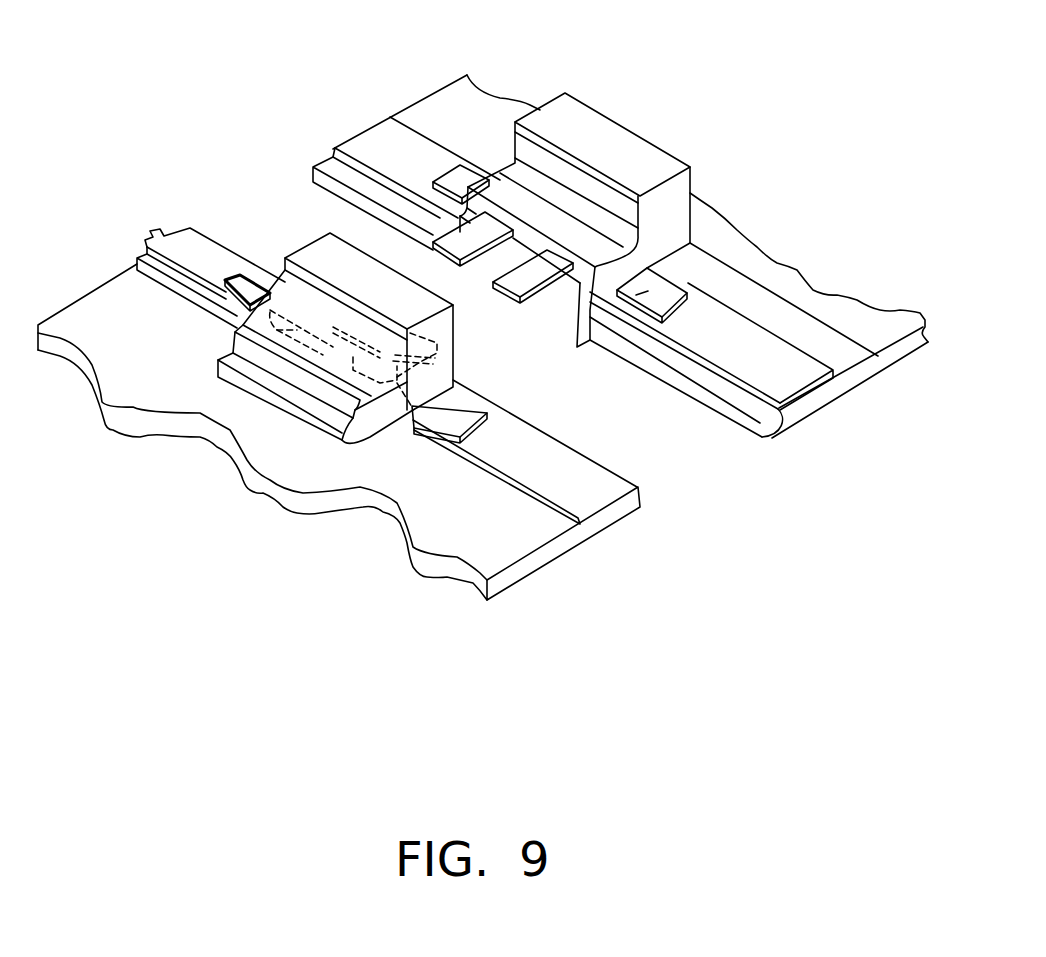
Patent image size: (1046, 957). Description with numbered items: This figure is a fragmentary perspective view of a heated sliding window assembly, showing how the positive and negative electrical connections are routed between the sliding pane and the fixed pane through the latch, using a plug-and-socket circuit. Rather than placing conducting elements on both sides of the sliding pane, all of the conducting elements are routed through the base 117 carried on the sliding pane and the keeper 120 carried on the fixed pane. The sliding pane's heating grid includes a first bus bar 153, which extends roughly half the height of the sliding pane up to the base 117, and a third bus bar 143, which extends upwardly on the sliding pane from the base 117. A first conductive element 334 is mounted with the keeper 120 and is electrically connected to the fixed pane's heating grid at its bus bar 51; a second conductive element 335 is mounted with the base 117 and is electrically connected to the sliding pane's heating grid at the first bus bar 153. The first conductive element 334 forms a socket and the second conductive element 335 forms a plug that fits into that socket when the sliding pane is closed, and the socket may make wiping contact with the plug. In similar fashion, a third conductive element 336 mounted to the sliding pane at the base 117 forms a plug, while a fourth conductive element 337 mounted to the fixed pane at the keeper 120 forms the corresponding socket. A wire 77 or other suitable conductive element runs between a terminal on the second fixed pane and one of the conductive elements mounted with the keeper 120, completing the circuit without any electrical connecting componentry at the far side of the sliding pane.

The bus bar 51 is at (600, 494).
The wire 77 is at (166, 240).
The base 117 is at (595, 127).
The keeper 120 is at (278, 393).
The third bus bar 143 is at (382, 130).
The first bus bar 153 is at (792, 384).
The first conductive element 334 is at (450, 405).
The second conductive element 335 is at (518, 282).
The third conductive element 336 is at (432, 247).
The fourth conductive element 337 is at (270, 316).